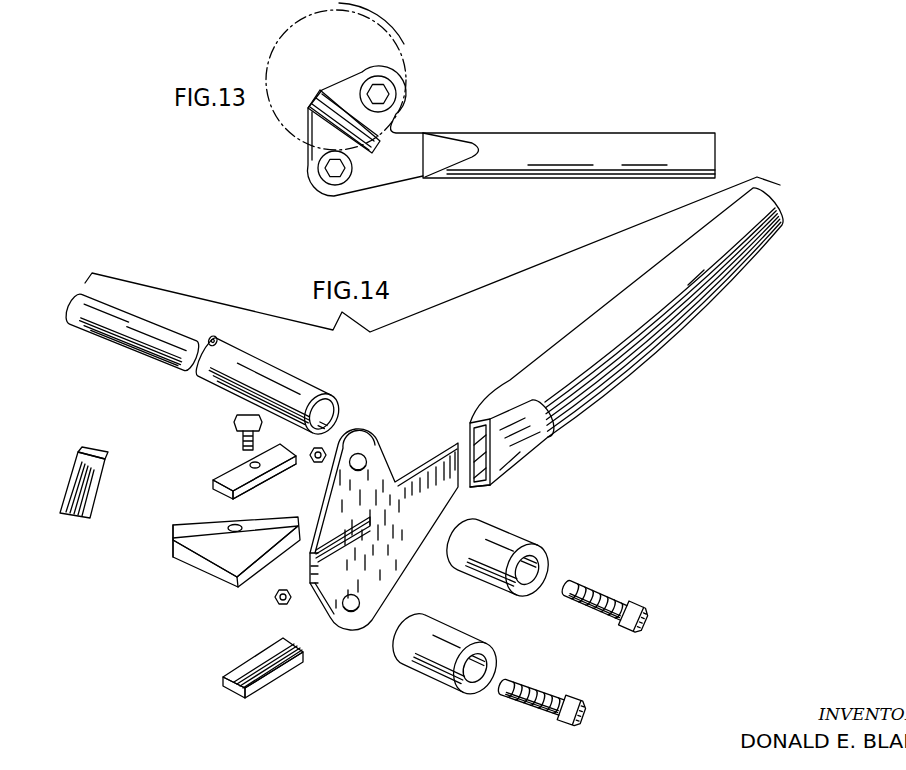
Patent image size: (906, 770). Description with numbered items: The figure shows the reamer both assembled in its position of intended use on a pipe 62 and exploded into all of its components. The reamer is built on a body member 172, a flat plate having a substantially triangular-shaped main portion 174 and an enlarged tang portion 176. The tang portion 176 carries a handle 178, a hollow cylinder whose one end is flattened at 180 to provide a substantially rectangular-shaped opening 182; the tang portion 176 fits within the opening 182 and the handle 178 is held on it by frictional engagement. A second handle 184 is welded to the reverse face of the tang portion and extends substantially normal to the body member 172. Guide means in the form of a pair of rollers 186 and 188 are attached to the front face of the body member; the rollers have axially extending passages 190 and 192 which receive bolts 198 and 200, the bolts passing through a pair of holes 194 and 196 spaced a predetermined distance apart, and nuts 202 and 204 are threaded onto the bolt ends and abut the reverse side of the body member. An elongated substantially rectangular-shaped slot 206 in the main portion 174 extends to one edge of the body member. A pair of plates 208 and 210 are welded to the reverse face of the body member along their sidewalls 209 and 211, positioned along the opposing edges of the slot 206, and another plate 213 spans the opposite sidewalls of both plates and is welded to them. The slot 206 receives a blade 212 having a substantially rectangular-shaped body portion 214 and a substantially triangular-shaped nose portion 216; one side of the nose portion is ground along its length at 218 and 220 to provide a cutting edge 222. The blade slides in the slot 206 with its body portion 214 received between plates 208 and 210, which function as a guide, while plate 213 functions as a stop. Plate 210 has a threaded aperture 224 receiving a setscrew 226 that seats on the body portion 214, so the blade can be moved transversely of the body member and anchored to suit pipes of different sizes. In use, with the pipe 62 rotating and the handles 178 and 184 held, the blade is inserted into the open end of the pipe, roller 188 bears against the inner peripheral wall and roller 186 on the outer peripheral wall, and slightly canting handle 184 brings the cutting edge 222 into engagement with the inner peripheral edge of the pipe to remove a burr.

In FIG. 13, the pipe 62 is at (279, 43).
In FIG. 13, the body member 172 is at (391, 172).
In FIG. 14, the body member 172 is at (385, 560).
In FIG. 13, the main portion 174 is at (306, 153).
In FIG. 14, the main portion 174 is at (340, 582).
In FIG. 14, the tang portion 176 is at (442, 495).
In FIG. 13, the handle 178 is at (583, 137).
In FIG. 14, the handle 178 is at (633, 350).
In FIG. 14, the flattened end 180 is at (520, 447).
In FIG. 14, the rectangular-shaped opening 182 is at (490, 487).
In FIG. 14, the handle 184 is at (143, 355).
In FIG. 13, the roller 186 is at (330, 188).
In FIG. 14, the roller 186 is at (433, 682).
In FIG. 13, the roller 188 is at (373, 77).
In FIG. 14, the roller 188 is at (487, 580).
In FIG. 14, the axially extending passage 190 is at (475, 693).
In FIG. 14, the axially extending passage 192 is at (527, 587).
In FIG. 14, the hole 194 is at (360, 612).
In FIG. 14, the hole 196 is at (367, 457).
In FIG. 13, the bolt 198 is at (327, 170).
In FIG. 14, the bolt 198 is at (540, 713).
In FIG. 13, the bolt 200 is at (385, 91).
In FIG. 14, the bolt 200 is at (613, 601).
In FIG. 14, the nut 202 is at (278, 604).
In FIG. 14, the nut 204 is at (316, 464).
In FIG. 14, the slot 206 is at (345, 535).
In FIG. 14, the plate 208 is at (263, 663).
In FIG. 14, the sidewall 209 is at (287, 668).
In FIG. 14, the plate 210 is at (227, 478).
In FIG. 14, the sidewall 211 is at (243, 493).
In FIG. 14, the blade 212 is at (162, 567).
In FIG. 14, the plate 213 is at (77, 462).
In FIG. 14, the body portion 214 is at (190, 533).
In FIG. 14, the nose portion 216 is at (215, 558).
In FIG. 14, the ground surface 218 is at (242, 587).
In FIG. 14, the ground surface 220 is at (250, 582).
In FIG. 13, the cutting edge 222 is at (393, 124).
In FIG. 14, the cutting edge 222 is at (310, 562).
In FIG. 14, the threaded aperture 224 is at (250, 464).
In FIG. 14, the setscrew 226 is at (237, 417).